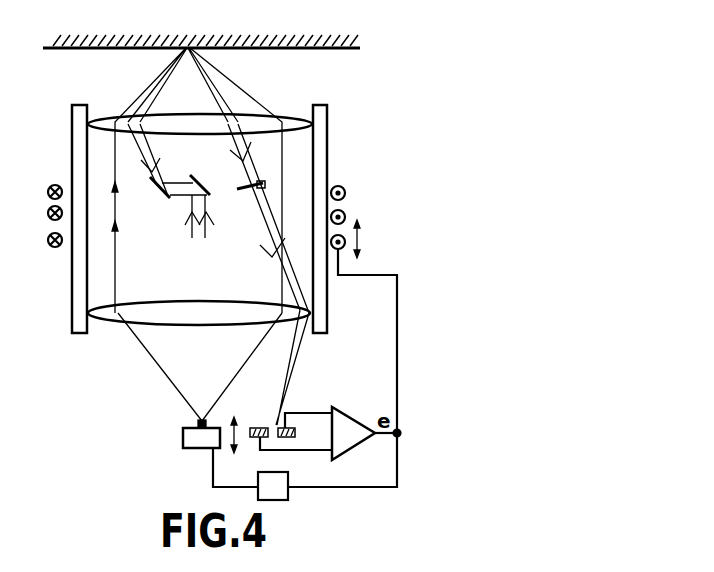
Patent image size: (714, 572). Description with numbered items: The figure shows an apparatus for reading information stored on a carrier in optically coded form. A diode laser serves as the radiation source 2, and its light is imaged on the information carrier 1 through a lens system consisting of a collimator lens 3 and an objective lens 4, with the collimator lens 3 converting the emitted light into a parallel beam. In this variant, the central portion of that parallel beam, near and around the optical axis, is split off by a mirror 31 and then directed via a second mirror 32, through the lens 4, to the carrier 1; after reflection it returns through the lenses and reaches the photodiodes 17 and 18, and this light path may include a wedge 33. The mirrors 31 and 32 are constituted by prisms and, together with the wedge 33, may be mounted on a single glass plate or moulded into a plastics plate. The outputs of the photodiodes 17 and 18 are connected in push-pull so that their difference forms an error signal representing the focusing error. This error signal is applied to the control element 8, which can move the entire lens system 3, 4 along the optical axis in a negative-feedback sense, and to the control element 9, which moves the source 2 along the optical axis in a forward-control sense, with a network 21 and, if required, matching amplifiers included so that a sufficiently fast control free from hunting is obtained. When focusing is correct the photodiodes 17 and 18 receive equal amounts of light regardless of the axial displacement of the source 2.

The information carrier 1 is at (330, 42).
The diode laser 2 is at (196, 424).
The collimator lens 3 is at (111, 318).
The objective lens 4 is at (116, 122).
The control element 8 is at (47, 213).
The control element 9 is at (188, 437).
The photodiode 17 is at (258, 427).
The photodiode 18 is at (296, 432).
The network 21 is at (290, 494).
The mirror 31 is at (200, 181).
The mirror 32 is at (157, 195).
The wedge 33 is at (262, 180).